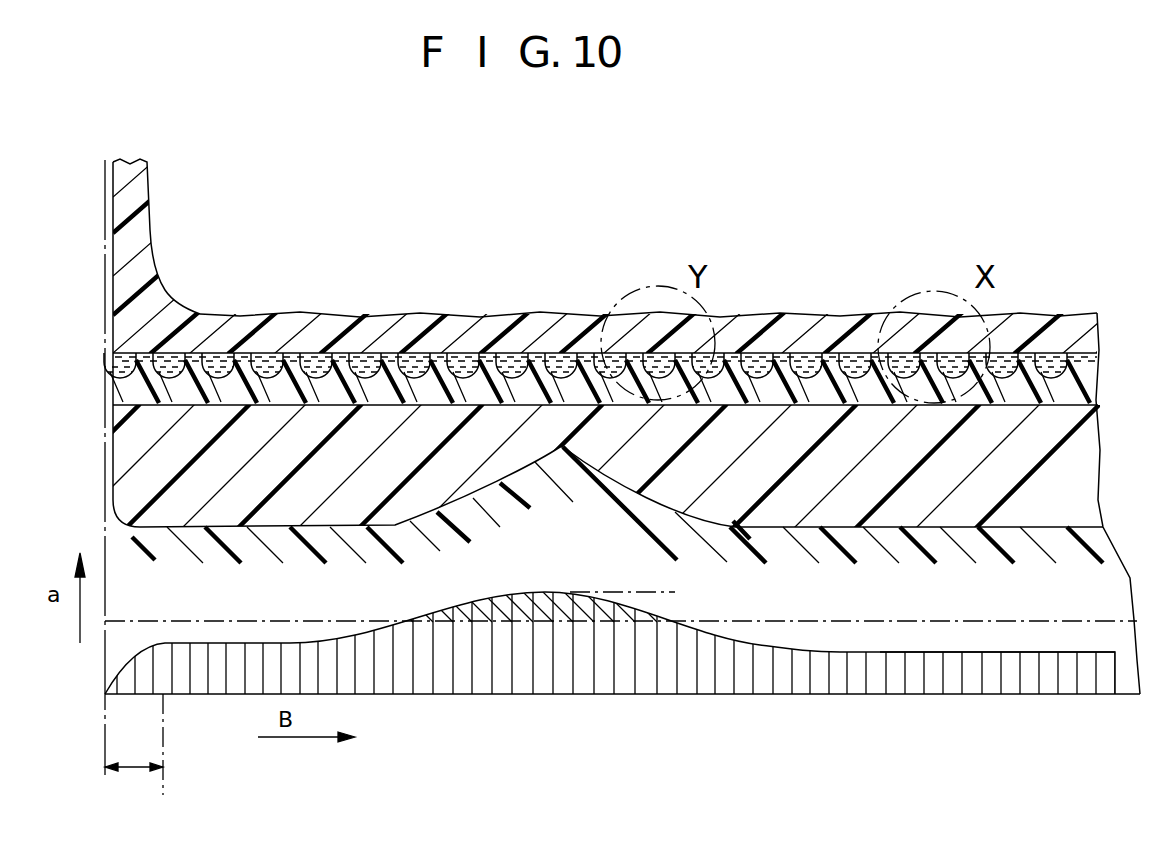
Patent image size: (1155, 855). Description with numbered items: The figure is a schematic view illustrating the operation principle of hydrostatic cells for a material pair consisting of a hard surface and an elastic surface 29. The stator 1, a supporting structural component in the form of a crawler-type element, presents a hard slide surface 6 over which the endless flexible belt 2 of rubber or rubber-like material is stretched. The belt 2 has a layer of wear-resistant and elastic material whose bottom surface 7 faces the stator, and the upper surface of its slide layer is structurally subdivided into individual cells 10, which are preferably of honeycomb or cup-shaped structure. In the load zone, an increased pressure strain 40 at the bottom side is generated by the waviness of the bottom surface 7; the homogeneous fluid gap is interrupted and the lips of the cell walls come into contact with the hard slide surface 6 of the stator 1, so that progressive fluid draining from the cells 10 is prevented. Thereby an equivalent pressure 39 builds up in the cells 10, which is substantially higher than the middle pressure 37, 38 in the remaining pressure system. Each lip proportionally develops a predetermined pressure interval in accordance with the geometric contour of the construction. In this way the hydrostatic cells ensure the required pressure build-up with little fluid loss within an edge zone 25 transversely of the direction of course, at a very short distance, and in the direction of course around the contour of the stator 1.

The stator 1 is at (333, 273).
The elastic surface 29 is at (202, 372).
The cells 10 is at (418, 366).
The slide surface 6 is at (555, 360).
The endless flexible belt 2 is at (492, 470).
The bottom surface 7 is at (338, 550).
The increased pressure strain 40 is at (544, 602).
The equivalent pressure 39 is at (683, 592).
The middle pressure 37 is at (890, 622).
The middle pressure 38 is at (990, 652).
The edge zone 25 is at (122, 767).